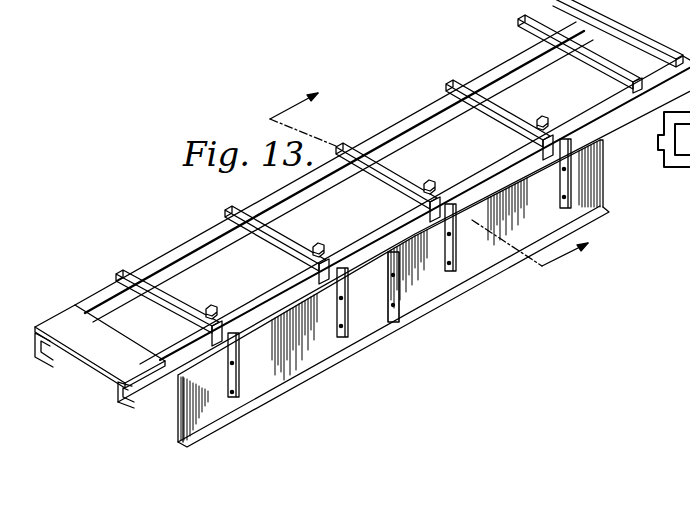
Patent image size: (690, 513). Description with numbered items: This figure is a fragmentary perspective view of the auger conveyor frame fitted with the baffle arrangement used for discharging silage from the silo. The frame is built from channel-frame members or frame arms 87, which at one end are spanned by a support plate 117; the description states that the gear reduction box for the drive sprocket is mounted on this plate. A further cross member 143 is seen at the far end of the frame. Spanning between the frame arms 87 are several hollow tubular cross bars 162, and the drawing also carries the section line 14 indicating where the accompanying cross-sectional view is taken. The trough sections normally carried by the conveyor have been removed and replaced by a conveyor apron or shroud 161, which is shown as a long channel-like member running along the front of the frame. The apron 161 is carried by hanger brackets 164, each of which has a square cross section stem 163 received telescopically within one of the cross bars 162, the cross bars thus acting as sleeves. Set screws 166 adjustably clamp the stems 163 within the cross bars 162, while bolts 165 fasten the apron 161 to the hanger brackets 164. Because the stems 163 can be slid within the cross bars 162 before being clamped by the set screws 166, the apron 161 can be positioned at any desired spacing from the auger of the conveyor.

The section line 14- 14 is at (439, 170).
The frame arms 87 is at (141, 393).
The support plate 117 is at (113, 352).
The end cross member 143 is at (618, 33).
The conveyor apron 161 is at (320, 350).
The hollow tubular cross bars 162 is at (181, 309).
The stems 163 is at (232, 325).
The hanger brackets 164 is at (238, 378).
The bolts 165 is at (238, 398).
The set screws 166 is at (217, 299).